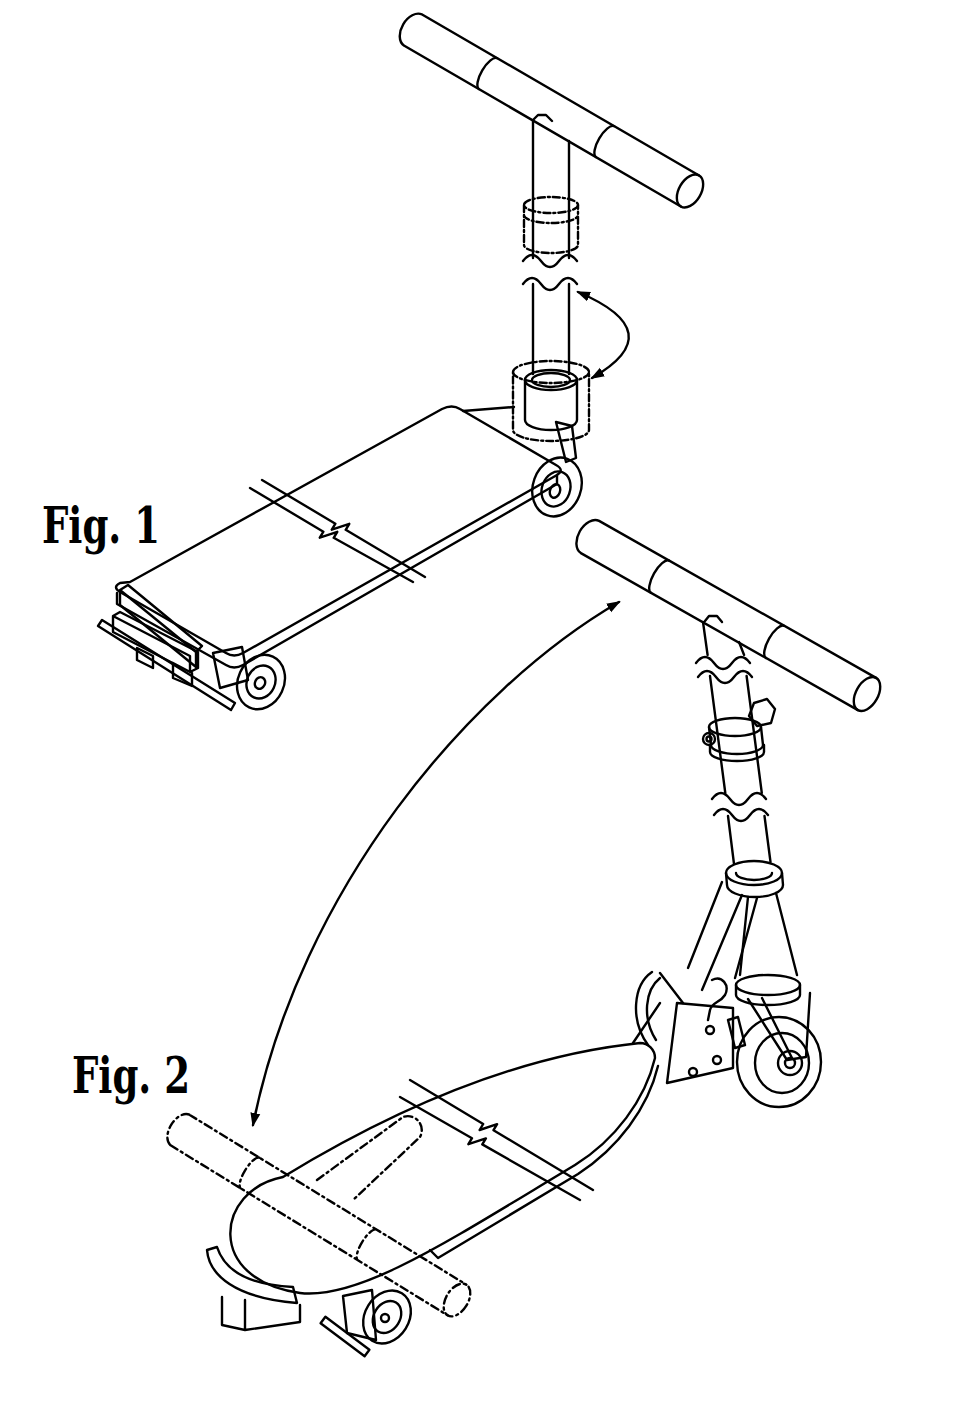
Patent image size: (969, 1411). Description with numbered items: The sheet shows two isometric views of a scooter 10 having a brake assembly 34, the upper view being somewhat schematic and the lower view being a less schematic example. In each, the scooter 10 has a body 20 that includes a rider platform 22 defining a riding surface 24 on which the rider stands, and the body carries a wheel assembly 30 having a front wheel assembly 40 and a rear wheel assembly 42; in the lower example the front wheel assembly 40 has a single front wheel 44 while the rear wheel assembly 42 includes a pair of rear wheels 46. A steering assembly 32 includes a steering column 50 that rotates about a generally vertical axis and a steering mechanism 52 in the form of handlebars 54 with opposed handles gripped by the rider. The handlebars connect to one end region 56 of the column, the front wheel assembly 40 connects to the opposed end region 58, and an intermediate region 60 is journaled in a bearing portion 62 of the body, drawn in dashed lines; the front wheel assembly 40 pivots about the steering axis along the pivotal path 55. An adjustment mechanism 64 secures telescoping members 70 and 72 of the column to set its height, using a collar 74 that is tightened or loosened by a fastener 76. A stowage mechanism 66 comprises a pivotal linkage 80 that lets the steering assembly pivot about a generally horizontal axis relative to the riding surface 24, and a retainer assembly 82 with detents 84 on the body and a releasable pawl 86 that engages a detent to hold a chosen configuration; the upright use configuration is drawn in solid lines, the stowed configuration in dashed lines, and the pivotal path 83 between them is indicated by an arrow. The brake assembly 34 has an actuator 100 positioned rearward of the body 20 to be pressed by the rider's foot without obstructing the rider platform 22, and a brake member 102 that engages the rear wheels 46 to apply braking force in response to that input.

In FIG. 1, the scooter 10 is at (192, 351).
In FIG. 1, the body 20 is at (292, 458).
In FIG. 2, the body 20 is at (496, 1040).
In FIG. 1, the rider platform 22 is at (378, 438).
In FIG. 2, the rider platform 22 is at (550, 1053).
In FIG. 1, the riding surface 24 is at (284, 591).
In FIG. 2, the riding surface 24 is at (469, 1206).
In FIG. 1, the wheel assembly 30 is at (592, 503).
In FIG. 2, the wheel assembly 30 is at (775, 1112).
In FIG. 1, the steering assembly 32 is at (450, 183).
In FIG. 2, the steering assembly 32 is at (658, 797).
In FIG. 1, the brake assembly 34 is at (124, 678).
In FIG. 2, the brake assembly 34 is at (205, 1303).
In FIG. 1, the front wheel assembly 40 is at (597, 478).
In FIG. 2, the front wheel assembly 40 is at (832, 1043).
In FIG. 1, the rear wheel assembly 42 is at (295, 702).
In FIG. 2, the rear wheel assembly 42 is at (455, 1320).
In FIG. 2, the front wheel 44 is at (804, 1083).
In FIG. 2, the rear wheels 46 is at (407, 1320).
In FIG. 1, the steering column 50 is at (600, 284).
In FIG. 2, the steering column 50 is at (762, 775).
In FIG. 1, the steering mechanism 52 is at (594, 98).
In FIG. 2, the steering mechanism 52 is at (778, 602).
In FIG. 1, the handlebars 54 is at (517, 68).
In FIG. 2, the handlebars 54 is at (702, 571).
In FIG. 1, the pivotal path 55 is at (638, 338).
In FIG. 1, the end region 56 is at (530, 163).
In FIG. 2, the end region 56 is at (700, 644).
In FIG. 1, the opposed end region 58 is at (578, 443).
In FIG. 2, the opposed end region 58 is at (810, 1000).
In FIG. 1, the intermediate region 60 is at (548, 392).
In FIG. 2, the intermediate region 60 is at (784, 895).
In FIG. 1, the bearing portion 62 is at (576, 410).
In FIG. 2, the bearing portion 62 is at (777, 928).
In FIG. 1, the adjustment mechanism 64 is at (580, 212).
In FIG. 2, the adjustment mechanism 64 is at (778, 713).
In FIG. 1, the stowage mechanism 66 is at (519, 368).
In FIG. 2, the stowage mechanism 66 is at (671, 908).
In FIG. 2, the telescoping member 70 is at (708, 697).
In FIG. 2, the telescoping member 72 is at (724, 777).
In FIG. 2, the collar 74 is at (760, 760).
In FIG. 2, the fastener 76 is at (704, 735).
In FIG. 2, the pivotal linkage 80 is at (640, 937).
In FIG. 2, the retainer assembly 82 is at (633, 1007).
In FIG. 2, the pivotal path 83 is at (397, 806).
In FIG. 2, the detents 84 is at (715, 995).
In FIG. 2, the releasable pawl 86 is at (730, 1038).
In FIG. 1, the actuator 100 is at (148, 627).
In FIG. 2, the actuator 100 is at (220, 1250).
In FIG. 1, the brake member 102 is at (213, 700).
In FIG. 2, the brake member 102 is at (340, 1333).